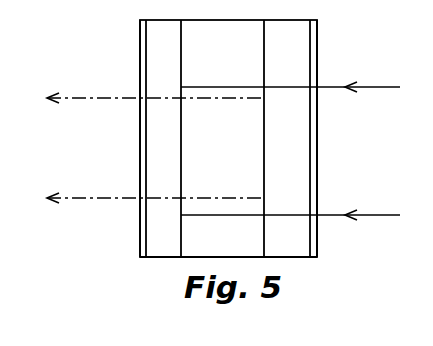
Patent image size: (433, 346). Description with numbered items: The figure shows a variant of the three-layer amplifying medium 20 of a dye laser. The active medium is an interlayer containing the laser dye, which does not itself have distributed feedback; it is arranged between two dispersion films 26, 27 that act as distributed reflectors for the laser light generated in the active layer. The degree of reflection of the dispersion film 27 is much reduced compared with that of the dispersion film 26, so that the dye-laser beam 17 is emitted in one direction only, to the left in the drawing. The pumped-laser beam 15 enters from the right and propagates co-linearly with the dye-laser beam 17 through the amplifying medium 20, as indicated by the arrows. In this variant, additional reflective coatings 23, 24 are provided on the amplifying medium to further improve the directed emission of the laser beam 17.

The pumped-laser beam 15 is at (400, 87).
The dye-laser beam 17 is at (100, 99).
The amplifying medium 20 is at (218, 44).
The reflective coating 23 is at (313, 243).
The reflective coating 24 is at (143, 230).
The dispersion film 26 is at (280, 50).
The dispersion film 27 is at (158, 70).